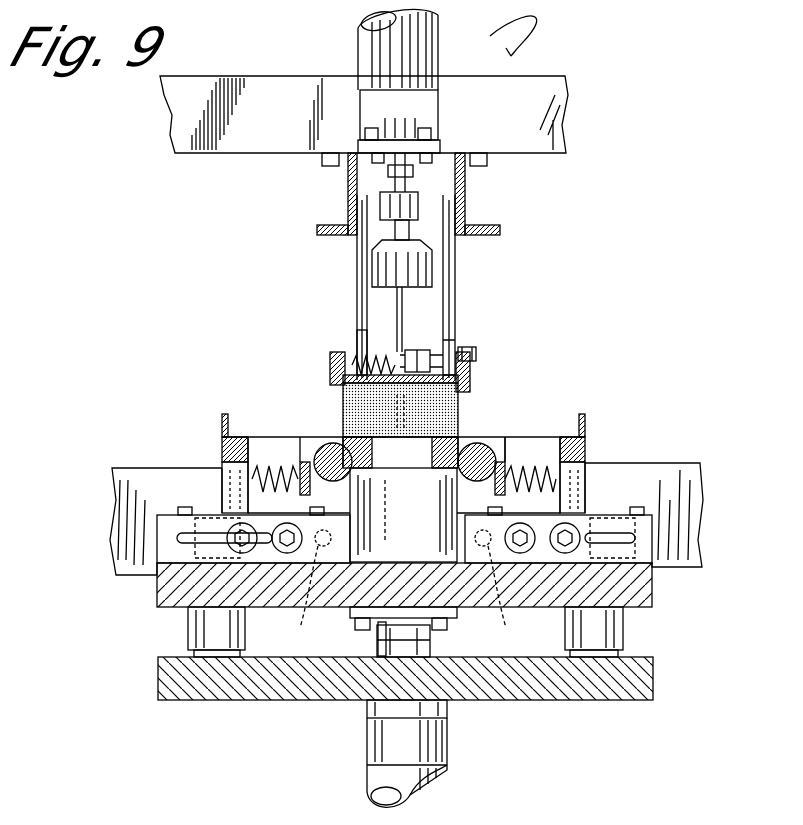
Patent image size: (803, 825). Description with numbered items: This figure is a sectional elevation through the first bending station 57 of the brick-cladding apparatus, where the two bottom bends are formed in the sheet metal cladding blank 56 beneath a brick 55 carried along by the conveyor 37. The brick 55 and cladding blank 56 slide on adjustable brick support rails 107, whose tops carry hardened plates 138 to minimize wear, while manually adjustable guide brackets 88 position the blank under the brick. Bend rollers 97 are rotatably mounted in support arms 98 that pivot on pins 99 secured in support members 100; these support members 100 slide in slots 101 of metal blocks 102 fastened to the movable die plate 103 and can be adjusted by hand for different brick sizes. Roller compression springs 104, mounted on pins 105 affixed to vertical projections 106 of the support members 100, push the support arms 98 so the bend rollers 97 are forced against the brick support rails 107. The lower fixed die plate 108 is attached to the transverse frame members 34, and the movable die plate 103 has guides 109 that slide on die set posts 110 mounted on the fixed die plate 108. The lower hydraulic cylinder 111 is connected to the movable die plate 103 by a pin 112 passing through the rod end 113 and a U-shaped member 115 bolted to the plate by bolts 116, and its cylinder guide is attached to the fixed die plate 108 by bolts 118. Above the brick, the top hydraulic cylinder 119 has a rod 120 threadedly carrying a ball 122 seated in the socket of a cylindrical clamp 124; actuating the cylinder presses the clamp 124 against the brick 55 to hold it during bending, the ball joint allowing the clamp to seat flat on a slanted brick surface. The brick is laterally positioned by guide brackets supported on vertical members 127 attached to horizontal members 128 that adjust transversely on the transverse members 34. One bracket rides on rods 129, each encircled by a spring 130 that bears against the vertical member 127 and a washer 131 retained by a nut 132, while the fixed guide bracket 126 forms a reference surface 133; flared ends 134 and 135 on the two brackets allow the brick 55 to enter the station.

The transverse member 34 is at (266, 76).
The conveyor 37 is at (384, 500).
The brick 55 is at (460, 406).
The cladding blank 56 is at (522, 437).
The first bending station 57 is at (501, 36).
The guide bracket 88 is at (222, 448).
The bend roller 97 is at (325, 445).
The support arm 98 is at (352, 440).
The pin 99 is at (298, 622).
The support member 100 is at (440, 542).
The slot 101 is at (218, 532).
The metal block 102 is at (184, 512).
The movable die plate 103 is at (160, 600).
The roller compression spring 104 is at (275, 437).
The pin 105 is at (262, 470).
The vertical projection 106 is at (222, 470).
The brick support rail 107 is at (305, 466).
The fixed die plate 108 is at (598, 698).
The guide 109 is at (188, 632).
The die set post 110 is at (194, 652).
The lower hydraulic cylinder 111 is at (370, 770).
The pin 112 is at (430, 646).
The end of hydraulic cylinder rod 113 is at (448, 630).
The U-shaped member 115 is at (378, 652).
The bolt 116 is at (354, 624).
The bolt 118 is at (372, 722).
The top hydraulic cylinder 119 is at (438, 55).
The rod 120 is at (404, 178).
The ball 122 is at (420, 246).
The cylindrical clamp 124 is at (436, 268).
The brick guide bracket 126 is at (460, 350).
The vertical member 127 is at (357, 298).
The horizontal member 128 is at (465, 190).
The rod 129 is at (356, 358).
The spring 130 is at (358, 345).
The washer 131 is at (398, 346).
The nut 132 is at (417, 352).
The reference surface 133 is at (470, 382).
The flared end 134 is at (332, 358).
The flared end 135 is at (476, 356).
The hardened plate 138 is at (344, 378).